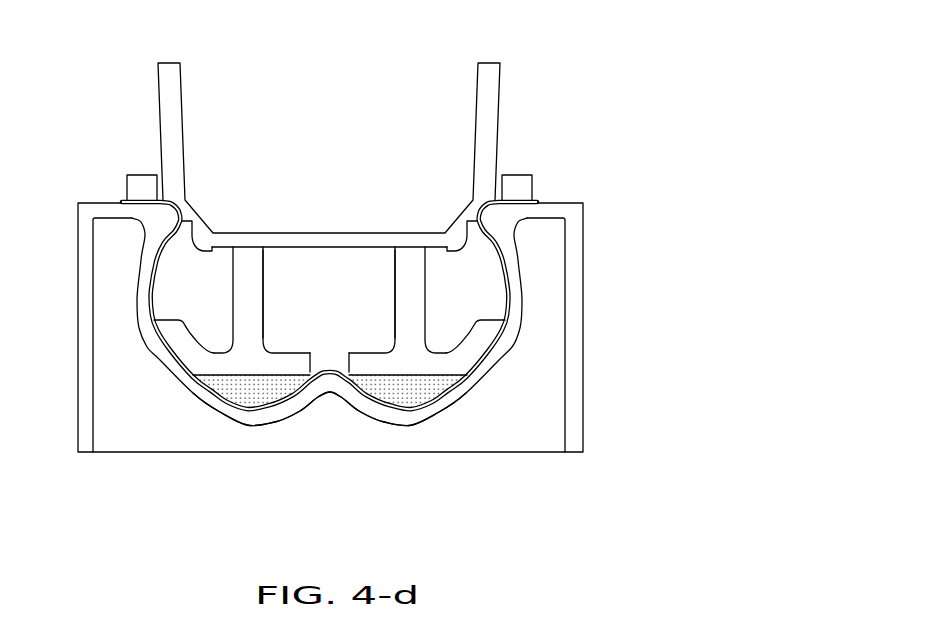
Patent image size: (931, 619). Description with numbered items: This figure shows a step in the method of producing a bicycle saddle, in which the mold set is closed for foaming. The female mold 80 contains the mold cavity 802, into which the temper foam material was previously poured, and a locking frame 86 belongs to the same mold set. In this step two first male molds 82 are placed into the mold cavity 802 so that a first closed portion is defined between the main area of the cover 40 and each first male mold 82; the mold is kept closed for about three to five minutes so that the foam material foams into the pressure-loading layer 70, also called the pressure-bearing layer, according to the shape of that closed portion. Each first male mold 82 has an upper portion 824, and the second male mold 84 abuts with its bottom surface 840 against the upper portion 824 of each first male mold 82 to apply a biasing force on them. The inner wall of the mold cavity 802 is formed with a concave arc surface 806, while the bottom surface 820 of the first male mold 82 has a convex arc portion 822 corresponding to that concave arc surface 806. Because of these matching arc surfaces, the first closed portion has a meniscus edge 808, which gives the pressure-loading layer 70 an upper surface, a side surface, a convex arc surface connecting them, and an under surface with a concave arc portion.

The cover 40 is at (257, 428).
The pressure-loading layer 70 is at (417, 405).
The female mold 80 is at (595, 284).
The first male mold 82 is at (222, 284).
The second male mold 84 is at (509, 60).
The locking frame 86 is at (139, 167).
The mold cavity 802 is at (482, 290).
The concave arc surface 806 is at (167, 360).
The meniscus edge 808 is at (190, 386).
The bottom surface 820 is at (247, 411).
The convex arc portion 822 is at (168, 352).
The upper portion 824 is at (280, 258).
The bottom surface 840 is at (351, 243).